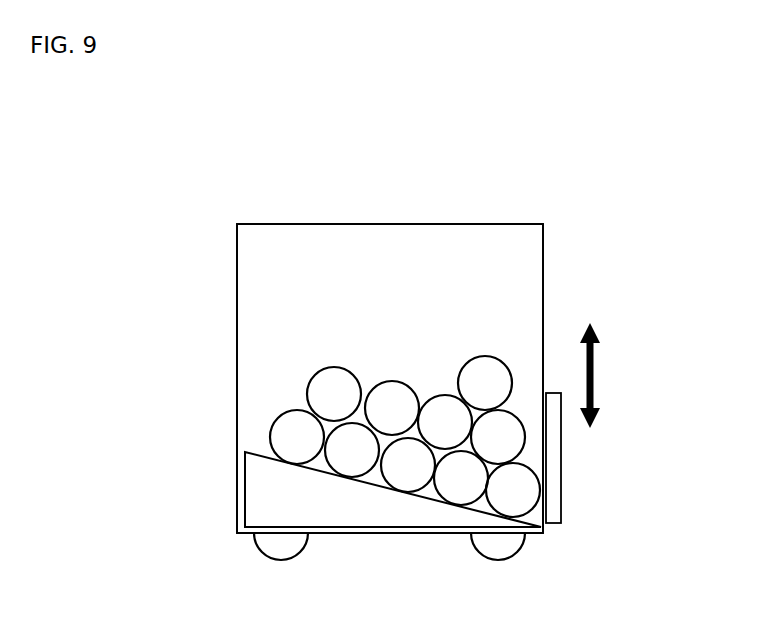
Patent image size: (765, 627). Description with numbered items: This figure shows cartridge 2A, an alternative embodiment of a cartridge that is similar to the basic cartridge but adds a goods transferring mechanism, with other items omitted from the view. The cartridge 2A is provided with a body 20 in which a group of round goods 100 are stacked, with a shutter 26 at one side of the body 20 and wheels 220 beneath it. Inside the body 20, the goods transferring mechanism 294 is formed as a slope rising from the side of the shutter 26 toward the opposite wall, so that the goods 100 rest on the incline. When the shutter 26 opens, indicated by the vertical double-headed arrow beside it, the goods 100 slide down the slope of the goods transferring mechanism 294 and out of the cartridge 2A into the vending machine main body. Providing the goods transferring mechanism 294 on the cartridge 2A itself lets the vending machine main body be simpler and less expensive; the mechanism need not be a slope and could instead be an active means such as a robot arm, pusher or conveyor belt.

The cartridge 2A is at (253, 191).
The body 20 is at (237, 313).
The goods transferring mechanism 294 is at (237, 485).
The goods 100 is at (497, 357).
The shutter 26 is at (562, 450).
The wheels 220 is at (256, 552).